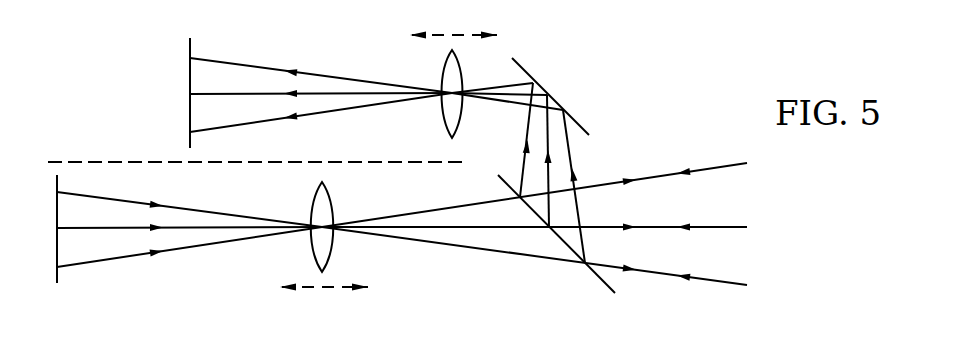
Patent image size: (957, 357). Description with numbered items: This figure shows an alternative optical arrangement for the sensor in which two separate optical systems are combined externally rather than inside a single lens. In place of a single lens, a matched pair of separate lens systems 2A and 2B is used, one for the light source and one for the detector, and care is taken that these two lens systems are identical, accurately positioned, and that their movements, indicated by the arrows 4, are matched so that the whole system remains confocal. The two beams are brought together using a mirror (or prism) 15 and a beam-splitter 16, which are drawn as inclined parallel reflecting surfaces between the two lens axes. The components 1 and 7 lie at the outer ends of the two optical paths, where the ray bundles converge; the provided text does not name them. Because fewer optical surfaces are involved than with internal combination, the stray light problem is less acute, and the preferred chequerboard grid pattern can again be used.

The object plane 1 is at (188, 83).
The lens system 2A is at (317, 210).
The lens system 2B is at (448, 78).
The lens displacement direction 4 is at (472, 31).
The image plane 7 is at (57, 257).
The mirror 15 is at (574, 111).
The beam-splitter 16 is at (596, 277).